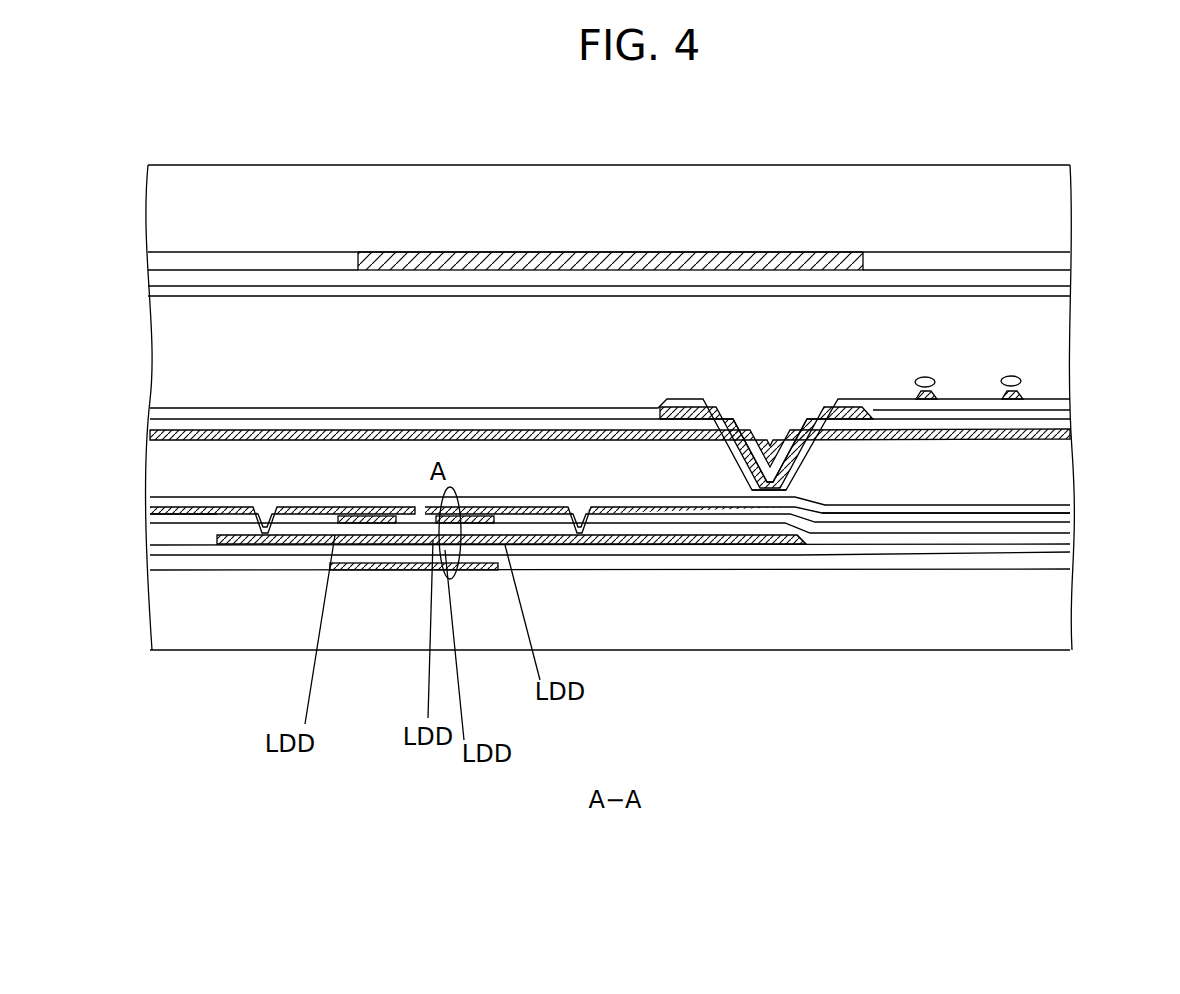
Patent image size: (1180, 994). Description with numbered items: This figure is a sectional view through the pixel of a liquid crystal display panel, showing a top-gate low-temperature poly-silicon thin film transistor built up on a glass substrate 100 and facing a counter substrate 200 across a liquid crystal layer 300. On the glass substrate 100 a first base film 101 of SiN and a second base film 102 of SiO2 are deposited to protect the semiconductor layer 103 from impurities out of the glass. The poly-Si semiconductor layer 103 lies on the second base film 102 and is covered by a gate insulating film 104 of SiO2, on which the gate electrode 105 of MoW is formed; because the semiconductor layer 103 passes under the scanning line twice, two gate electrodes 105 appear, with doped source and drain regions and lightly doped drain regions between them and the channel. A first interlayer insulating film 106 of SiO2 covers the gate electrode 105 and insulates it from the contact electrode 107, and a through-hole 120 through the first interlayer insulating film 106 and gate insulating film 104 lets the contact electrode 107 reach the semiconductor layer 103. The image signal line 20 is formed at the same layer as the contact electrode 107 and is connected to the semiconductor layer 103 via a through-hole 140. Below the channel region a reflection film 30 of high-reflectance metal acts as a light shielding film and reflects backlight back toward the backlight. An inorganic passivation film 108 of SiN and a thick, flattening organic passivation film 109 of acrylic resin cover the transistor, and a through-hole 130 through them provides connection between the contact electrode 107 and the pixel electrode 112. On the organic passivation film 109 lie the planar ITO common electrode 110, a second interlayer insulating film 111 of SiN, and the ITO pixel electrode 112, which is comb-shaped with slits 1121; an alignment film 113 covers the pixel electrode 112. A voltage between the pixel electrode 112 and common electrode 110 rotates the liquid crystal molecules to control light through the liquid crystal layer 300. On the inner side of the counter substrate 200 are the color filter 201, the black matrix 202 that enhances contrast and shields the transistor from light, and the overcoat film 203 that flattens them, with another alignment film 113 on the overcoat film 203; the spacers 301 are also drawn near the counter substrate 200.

The image signal line 20 is at (213, 515).
The reflection film 30 is at (360, 540).
The glass substrate 100 is at (1050, 608).
The first base film 101 is at (757, 568).
The second base film 102 is at (815, 548).
The semiconductor layer 103 is at (370, 560).
The gate insulating film 104 is at (880, 540).
The gate electrode 105 is at (405, 525).
The first interlayer insulating film 106 is at (945, 527).
The contact electrode 107 is at (680, 513).
The inorganic passivation film 108 is at (1003, 512).
The organic passivation film 109 is at (1050, 475).
The common electrode 110 is at (550, 430).
The second interlayer insulating film 111 is at (613, 422).
The pixel electrode 112 is at (682, 408).
The alignment film 113 is at (796, 292).
The through-hole 120 is at (578, 497).
The through-hole 130 is at (770, 470).
The through-hole 140 is at (265, 505).
The counter substrate 200 is at (1048, 212).
The color filter 201 is at (330, 258).
The black matrix 202 is at (657, 258).
The overcoat film 203 is at (1055, 280).
The liquid crystal layer 300 is at (1055, 350).
The spacer 301 is at (1008, 376).
The slit 1121 is at (965, 399).